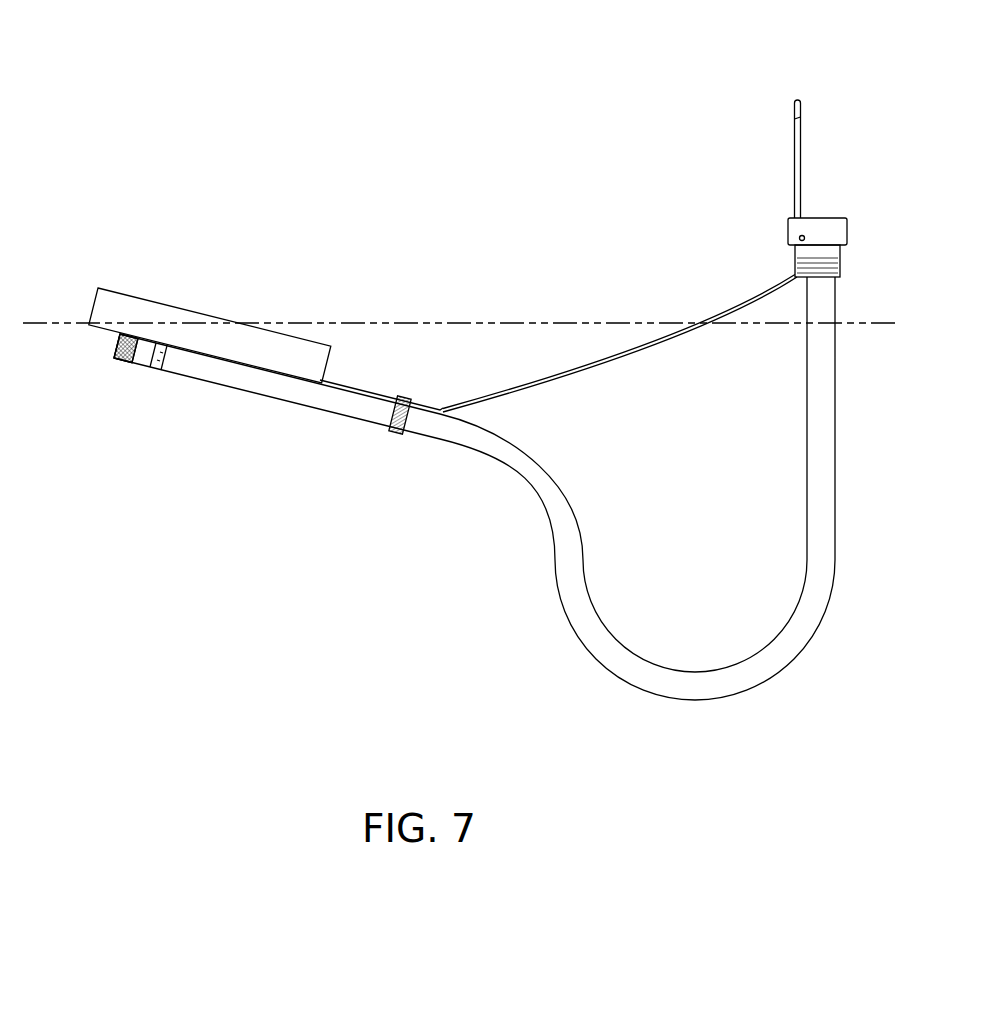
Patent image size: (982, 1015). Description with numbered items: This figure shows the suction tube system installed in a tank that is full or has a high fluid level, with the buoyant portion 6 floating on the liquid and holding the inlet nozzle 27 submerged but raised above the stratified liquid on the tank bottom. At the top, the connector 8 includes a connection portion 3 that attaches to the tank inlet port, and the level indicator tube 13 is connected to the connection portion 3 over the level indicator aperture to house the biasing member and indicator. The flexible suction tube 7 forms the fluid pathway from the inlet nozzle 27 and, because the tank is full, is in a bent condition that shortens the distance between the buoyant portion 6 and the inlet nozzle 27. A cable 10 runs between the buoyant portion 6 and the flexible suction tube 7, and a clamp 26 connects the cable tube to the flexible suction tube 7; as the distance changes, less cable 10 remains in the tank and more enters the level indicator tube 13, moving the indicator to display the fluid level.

The connection portion 3 is at (800, 267).
The buoyant portion 6 is at (160, 318).
The flexible suction tube 7 is at (313, 400).
The connector 8 is at (797, 228).
The cable 10 is at (630, 356).
The level indicator tube 13 is at (798, 98).
The clamp 26 is at (390, 432).
The inlet nozzle 27 is at (117, 362).